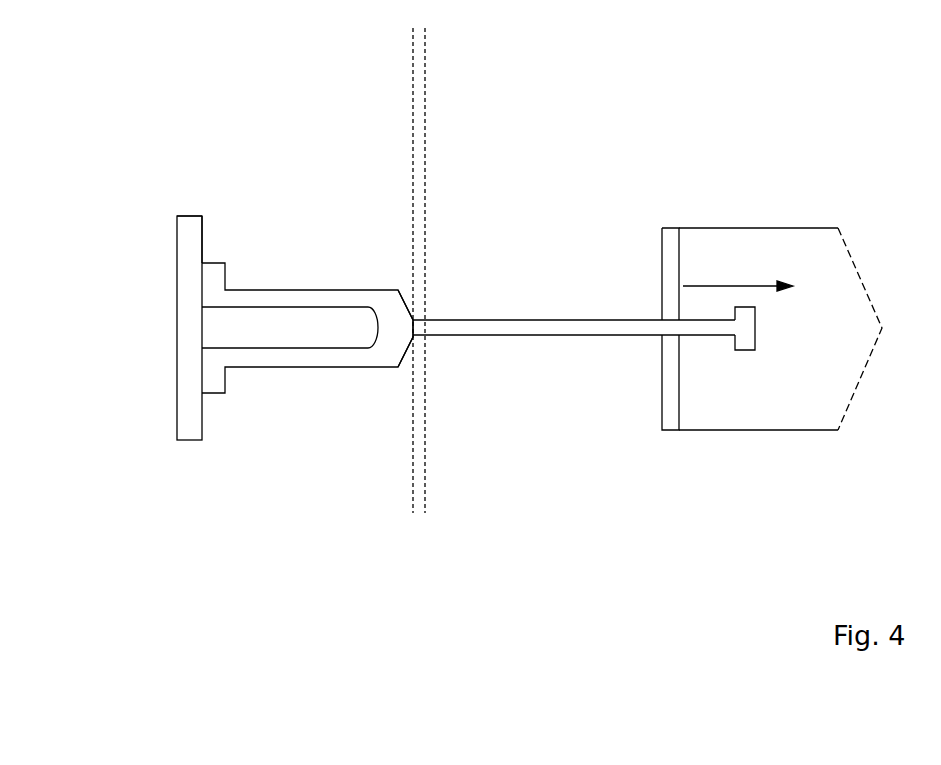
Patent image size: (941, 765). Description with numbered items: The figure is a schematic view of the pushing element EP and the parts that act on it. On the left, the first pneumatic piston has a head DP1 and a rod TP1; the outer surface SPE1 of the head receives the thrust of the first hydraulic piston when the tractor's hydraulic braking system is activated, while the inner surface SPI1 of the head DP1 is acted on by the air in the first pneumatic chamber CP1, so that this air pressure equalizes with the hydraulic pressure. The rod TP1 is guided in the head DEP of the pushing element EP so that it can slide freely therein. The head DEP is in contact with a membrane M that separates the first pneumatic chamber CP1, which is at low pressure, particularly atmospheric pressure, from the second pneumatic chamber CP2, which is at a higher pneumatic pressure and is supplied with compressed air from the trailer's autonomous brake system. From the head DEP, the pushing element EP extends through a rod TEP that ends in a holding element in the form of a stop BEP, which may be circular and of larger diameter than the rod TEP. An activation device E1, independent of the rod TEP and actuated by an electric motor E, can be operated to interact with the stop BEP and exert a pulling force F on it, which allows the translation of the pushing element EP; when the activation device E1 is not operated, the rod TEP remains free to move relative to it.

The first pneumatic chamber CP1 is at (304, 30).
The second pneumatic chamber CP2 is at (534, 30).
The membrane M is at (420, 502).
The outer surface of the head of the first pneumatic piston SPE1 is at (182, 257).
The head of the first pneumatic piston DP1 is at (190, 216).
The inner surface of the head of the first pneumatic piston SPI1 is at (202, 238).
The rod of the first pneumatic piston TP1 is at (273, 370).
The head of the pushing element DEP is at (390, 330).
The pushing element EP is at (383, 358).
The rod of the pushing element TEP is at (573, 337).
The activation device E1 is at (669, 237).
The electric motor E is at (801, 329).
The stop BEP is at (747, 347).
The pulling force F is at (738, 272).